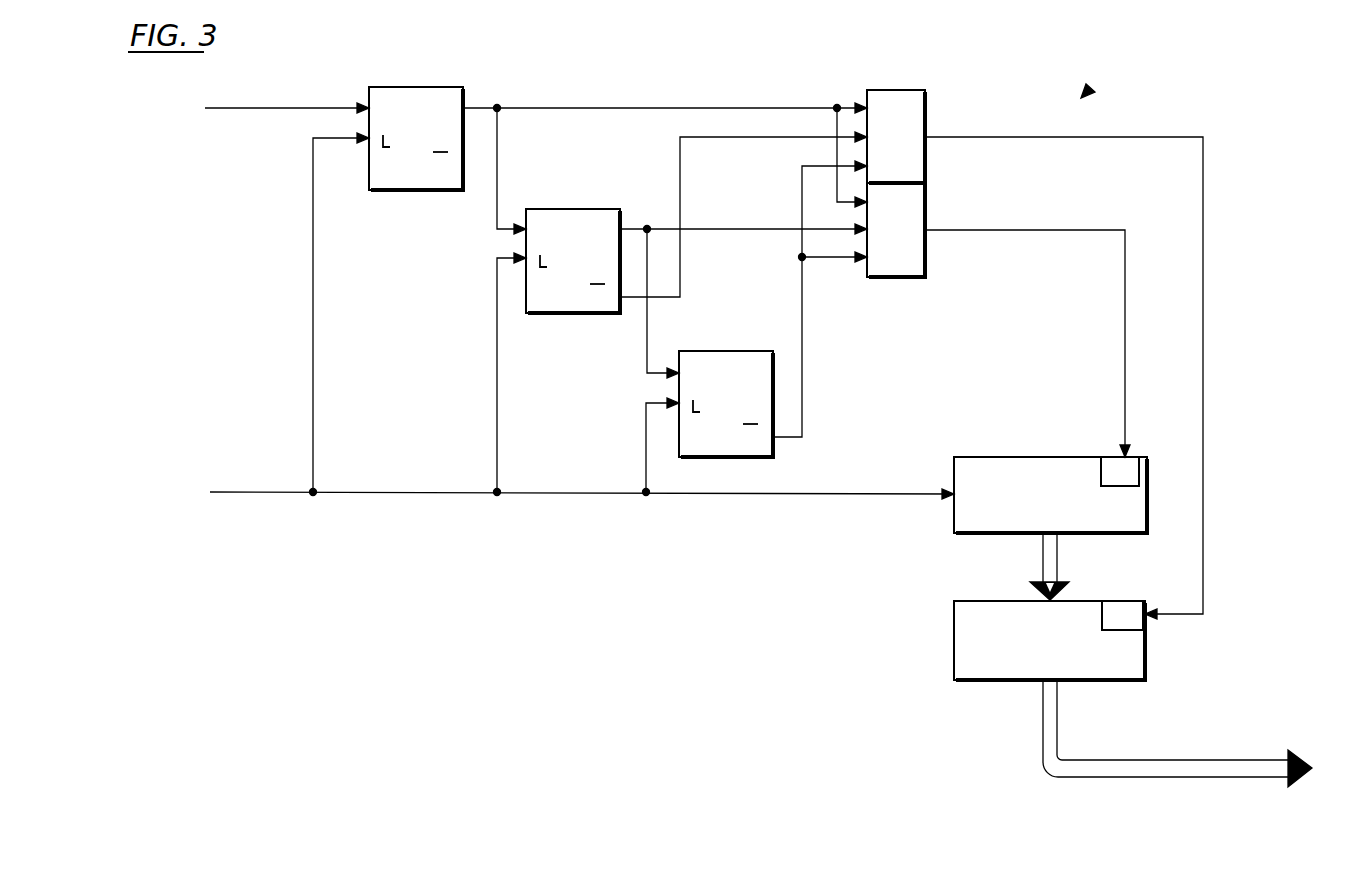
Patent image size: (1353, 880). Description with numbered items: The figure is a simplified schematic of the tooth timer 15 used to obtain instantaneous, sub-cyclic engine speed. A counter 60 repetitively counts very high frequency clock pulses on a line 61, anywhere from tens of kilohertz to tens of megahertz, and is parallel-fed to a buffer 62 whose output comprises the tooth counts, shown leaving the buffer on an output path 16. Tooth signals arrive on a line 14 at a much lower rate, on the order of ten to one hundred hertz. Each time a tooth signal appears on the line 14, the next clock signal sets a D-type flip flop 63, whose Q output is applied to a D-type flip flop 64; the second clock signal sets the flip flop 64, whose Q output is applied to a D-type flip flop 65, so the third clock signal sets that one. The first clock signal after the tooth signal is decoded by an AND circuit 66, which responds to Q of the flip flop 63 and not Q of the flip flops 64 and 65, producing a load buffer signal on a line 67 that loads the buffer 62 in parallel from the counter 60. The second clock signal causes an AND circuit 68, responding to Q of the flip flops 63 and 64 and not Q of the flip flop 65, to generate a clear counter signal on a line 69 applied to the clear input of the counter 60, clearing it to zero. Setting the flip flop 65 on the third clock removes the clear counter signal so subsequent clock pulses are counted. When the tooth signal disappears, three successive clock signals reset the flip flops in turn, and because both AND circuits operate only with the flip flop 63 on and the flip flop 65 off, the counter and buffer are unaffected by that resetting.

The line 14 is at (327, 107).
The tooth timer 15 is at (1084, 95).
The tooth count output line 16 is at (1197, 765).
The counter 60 is at (1022, 457).
The line 61 is at (828, 493).
The buffer 62 is at (954, 638).
The D-type flip flop 63 is at (413, 83).
The D-type flip flop 64 is at (573, 208).
The D-type flip flop 65 is at (722, 350).
The AND circuit 66 is at (892, 94).
The line 67 is at (1148, 137).
The AND circuit 68 is at (898, 267).
The line 69 is at (1125, 323).